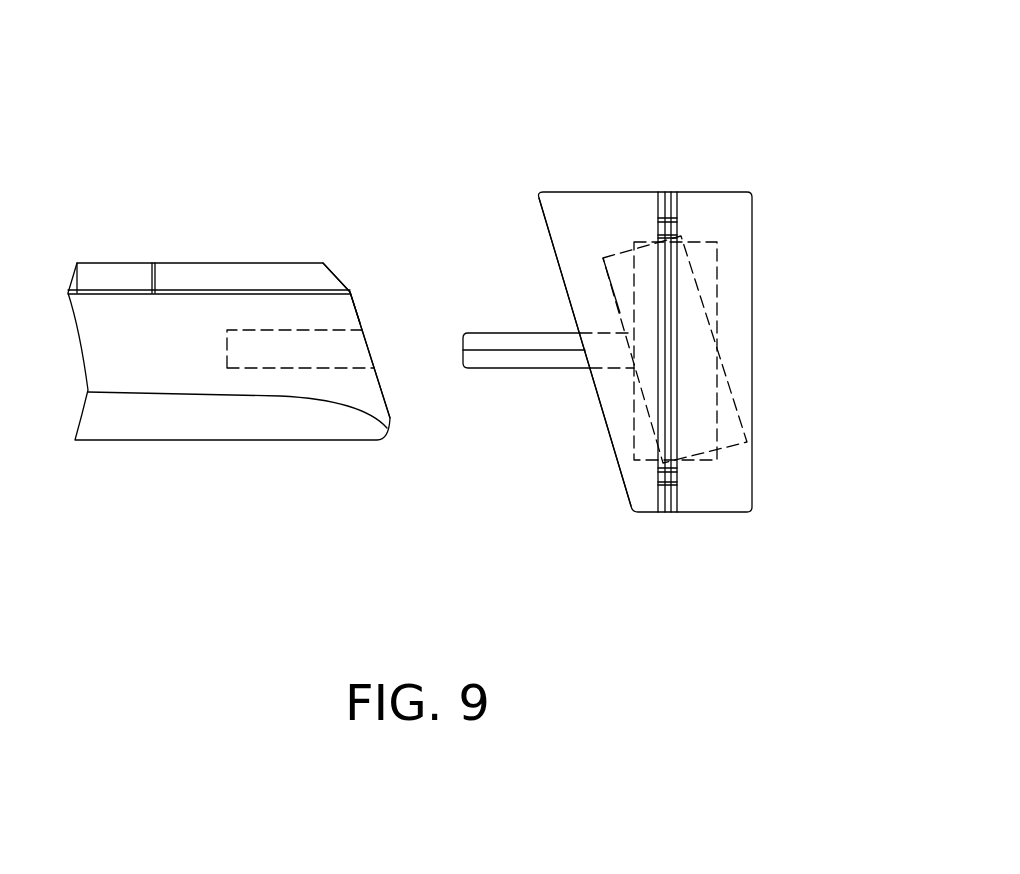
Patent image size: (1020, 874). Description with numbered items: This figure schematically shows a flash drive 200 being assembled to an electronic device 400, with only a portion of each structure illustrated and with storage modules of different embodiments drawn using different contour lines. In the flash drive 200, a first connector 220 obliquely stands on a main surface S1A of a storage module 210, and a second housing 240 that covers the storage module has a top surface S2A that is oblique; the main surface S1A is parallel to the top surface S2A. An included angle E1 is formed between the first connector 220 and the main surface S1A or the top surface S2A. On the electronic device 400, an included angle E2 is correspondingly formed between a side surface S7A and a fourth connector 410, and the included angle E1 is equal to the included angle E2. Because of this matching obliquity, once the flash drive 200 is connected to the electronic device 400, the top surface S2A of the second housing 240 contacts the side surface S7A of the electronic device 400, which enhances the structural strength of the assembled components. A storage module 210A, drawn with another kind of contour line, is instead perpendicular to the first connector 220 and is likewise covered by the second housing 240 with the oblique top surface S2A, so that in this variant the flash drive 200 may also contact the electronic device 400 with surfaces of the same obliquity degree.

The electronic device 400 is at (240, 178).
The fourth connector 410 is at (298, 360).
The side surface S7A is at (362, 312).
The included angle E2 is at (346, 294).
The flash drive 200 is at (650, 260).
The storage module 210 is at (603, 258).
The storage module 210A is at (717, 258).
The first connector 220 is at (490, 332).
The second housing 240 is at (712, 191).
The included angle E1 is at (610, 294).
The main surface S1A is at (653, 422).
The top surface S2A is at (593, 383).